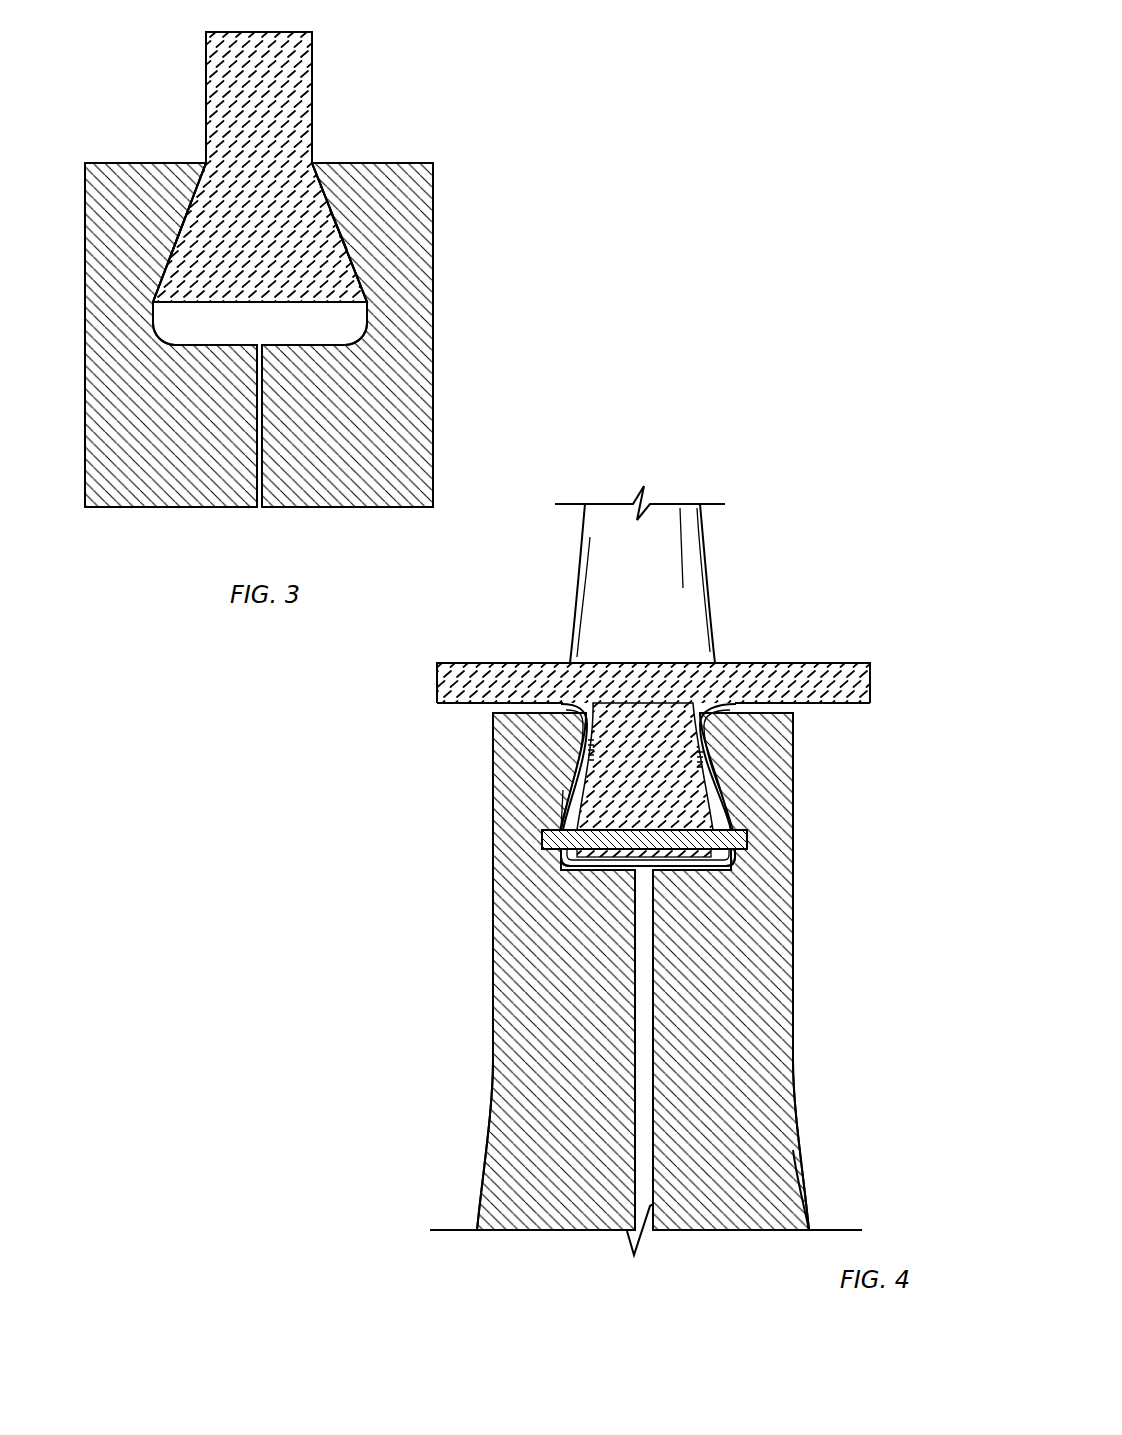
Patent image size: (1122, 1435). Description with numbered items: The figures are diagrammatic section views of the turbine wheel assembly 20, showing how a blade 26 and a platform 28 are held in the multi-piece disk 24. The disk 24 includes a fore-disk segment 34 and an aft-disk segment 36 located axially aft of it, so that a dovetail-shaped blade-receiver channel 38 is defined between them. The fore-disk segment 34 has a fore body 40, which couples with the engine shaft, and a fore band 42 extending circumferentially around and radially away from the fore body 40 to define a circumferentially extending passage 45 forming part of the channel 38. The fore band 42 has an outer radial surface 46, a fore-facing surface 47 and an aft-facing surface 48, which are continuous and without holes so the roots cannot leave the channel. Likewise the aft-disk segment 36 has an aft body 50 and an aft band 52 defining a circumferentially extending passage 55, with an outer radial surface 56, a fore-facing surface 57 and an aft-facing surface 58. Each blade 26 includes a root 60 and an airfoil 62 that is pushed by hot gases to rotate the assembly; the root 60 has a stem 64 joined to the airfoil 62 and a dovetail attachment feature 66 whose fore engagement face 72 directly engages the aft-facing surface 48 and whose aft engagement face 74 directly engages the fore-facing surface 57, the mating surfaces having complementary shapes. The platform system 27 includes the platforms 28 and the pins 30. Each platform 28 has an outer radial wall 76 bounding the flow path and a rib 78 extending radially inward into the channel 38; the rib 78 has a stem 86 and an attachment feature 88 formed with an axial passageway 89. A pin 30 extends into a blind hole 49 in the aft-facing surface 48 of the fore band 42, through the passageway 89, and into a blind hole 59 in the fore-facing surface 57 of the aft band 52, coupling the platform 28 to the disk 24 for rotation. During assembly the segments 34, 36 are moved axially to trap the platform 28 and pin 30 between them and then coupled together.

In FIG. 3, the turbine wheel assembly 20 is at (480, 106).
In FIG. 4, the turbine wheel assembly 20 is at (806, 523).
In FIG. 3, the disk 24 is at (455, 332).
In FIG. 4, the disk 24 is at (484, 1145).
In FIG. 3, the blade 26 is at (316, 59).
In FIG. 4, the blade 26 is at (712, 563).
In FIG. 4, the platform system 27 is at (430, 691).
In FIG. 4, the platform 28 is at (527, 658).
In FIG. 4, the pin 30 is at (751, 842).
In FIG. 4, the fore-disk segment 34 is at (490, 1078).
In FIG. 4, the aft-disk segment 36 is at (805, 1152).
In FIG. 3, the blade-receiver channel 38 is at (212, 314).
In FIG. 4, the blade-receiver channel 38 is at (677, 876).
In FIG. 3, the fore body 40 is at (83, 474).
In FIG. 4, the fore body 40 is at (476, 1193).
In FIG. 3, the fore band 42 is at (82, 238).
In FIG. 4, the fore band 42 is at (486, 733).
In FIG. 3, the circumferentially extending passage 45 is at (237, 328).
In FIG. 3, the outer radial surface 46 is at (102, 163).
In FIG. 3, the fore-facing surface 47 is at (80, 172).
In FIG. 4, the fore-facing surface 47 is at (493, 750).
In FIG. 3, the aft-facing surface 48 is at (187, 221).
In FIG. 4, the aft-facing surface 48 is at (578, 797).
In FIG. 4, the blind hole 49 is at (553, 850).
In FIG. 3, the aft body 50 is at (437, 400).
In FIG. 4, the aft body 50 is at (812, 1192).
In FIG. 3, the aft band 52 is at (437, 232).
In FIG. 4, the aft band 52 is at (800, 726).
In FIG. 3, the circumferentially extending passage 55 is at (328, 314).
In FIG. 3, the outer radial surface 56 is at (354, 163).
In FIG. 3, the fore-facing surface 57 is at (327, 203).
In FIG. 4, the fore-facing surface 57 is at (712, 762).
In FIG. 3, the aft-facing surface 58 is at (433, 186).
In FIG. 4, the aft-facing surface 58 is at (794, 810).
In FIG. 4, the blind hole 59 is at (742, 852).
In FIG. 3, the root 60 is at (266, 210).
In FIG. 4, the airfoil 62 is at (713, 601).
In FIG. 3, the stem 64 is at (204, 150).
In FIG. 3, the attachment feature 66 is at (168, 311).
In FIG. 3, the fore engagement face 72 is at (173, 250).
In FIG. 3, the aft engagement face 74 is at (347, 243).
In FIG. 4, the outer radial wall 76 is at (831, 660).
In FIG. 4, the rib 78 is at (583, 770).
In FIG. 4, the stem 86 is at (707, 719).
In FIG. 4, the attachment feature 88 is at (717, 810).
In FIG. 4, the passageway 89 is at (603, 860).